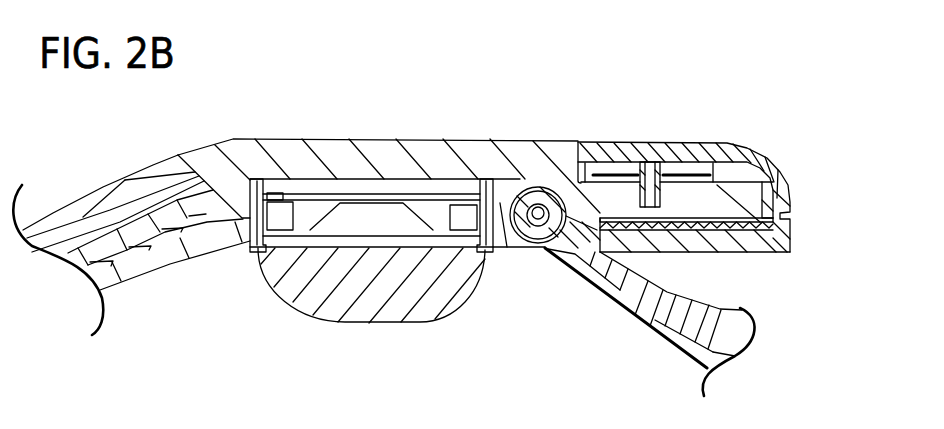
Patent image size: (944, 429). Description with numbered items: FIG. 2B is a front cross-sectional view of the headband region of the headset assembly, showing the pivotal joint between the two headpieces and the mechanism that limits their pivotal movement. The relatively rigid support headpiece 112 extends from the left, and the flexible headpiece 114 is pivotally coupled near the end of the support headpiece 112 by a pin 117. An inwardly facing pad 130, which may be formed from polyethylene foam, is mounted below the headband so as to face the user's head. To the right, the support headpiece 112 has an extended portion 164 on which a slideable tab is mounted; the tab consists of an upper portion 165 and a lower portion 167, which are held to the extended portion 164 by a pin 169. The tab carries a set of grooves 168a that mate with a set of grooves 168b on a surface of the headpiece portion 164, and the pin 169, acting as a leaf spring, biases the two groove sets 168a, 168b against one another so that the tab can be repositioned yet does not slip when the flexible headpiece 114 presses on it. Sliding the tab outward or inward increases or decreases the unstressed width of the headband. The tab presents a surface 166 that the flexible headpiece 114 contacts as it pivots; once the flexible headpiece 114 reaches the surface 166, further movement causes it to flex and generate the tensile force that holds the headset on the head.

The support headpiece 112 is at (210, 158).
The flexible headpiece 114 is at (752, 311).
The pin 117 is at (539, 224).
The inwardly facing pad 130 is at (389, 310).
The extended portion of the support headpiece 164 is at (738, 205).
The upper portion of the tab 165 is at (750, 151).
The surface of the tab 166 is at (640, 256).
The lower portion of the tab 167 is at (786, 243).
The set of grooves of the tab 168a is at (747, 223).
The set of grooves of the headpiece portion 168b is at (716, 223).
The pin / leaf spring 169 is at (650, 172).